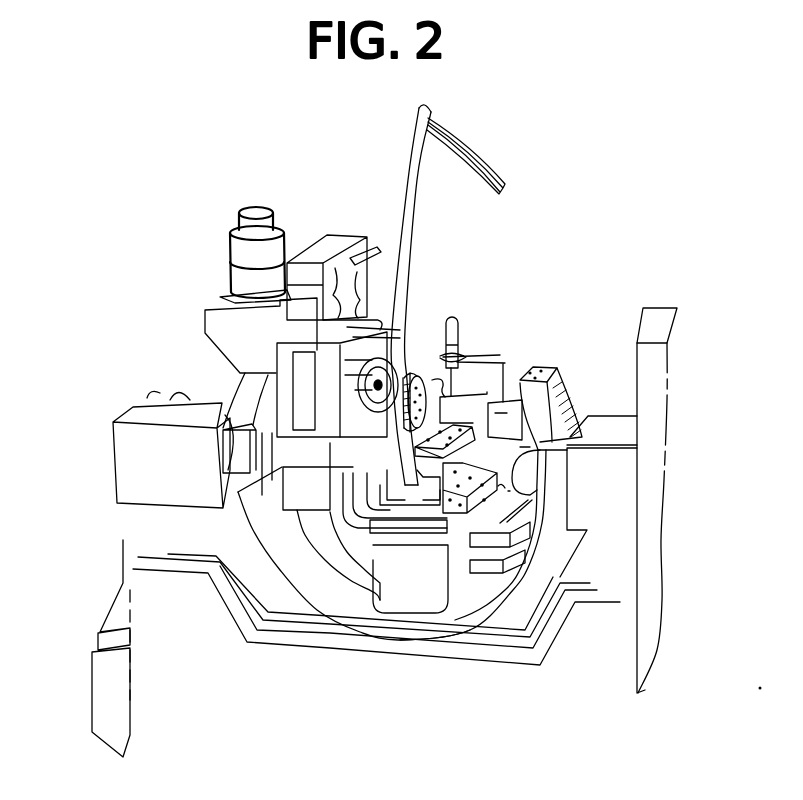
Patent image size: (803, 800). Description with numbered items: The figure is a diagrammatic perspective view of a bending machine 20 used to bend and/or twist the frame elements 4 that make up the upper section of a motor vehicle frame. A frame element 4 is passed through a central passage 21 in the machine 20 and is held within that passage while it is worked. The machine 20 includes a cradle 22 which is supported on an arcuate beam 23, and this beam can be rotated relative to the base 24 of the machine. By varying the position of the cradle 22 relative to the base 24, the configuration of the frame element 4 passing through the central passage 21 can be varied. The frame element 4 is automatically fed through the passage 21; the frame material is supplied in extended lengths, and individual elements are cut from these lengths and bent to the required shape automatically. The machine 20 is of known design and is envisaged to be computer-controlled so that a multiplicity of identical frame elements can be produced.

The frame element 4 is at (419, 241).
The bending machine 20 is at (125, 527).
The central passage 21 is at (395, 492).
The cradle 22 is at (488, 557).
The arcuate beam 23 is at (557, 377).
The base 24 is at (620, 515).